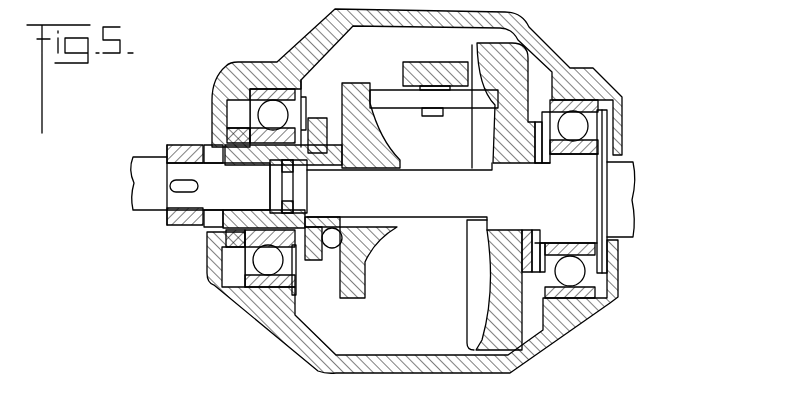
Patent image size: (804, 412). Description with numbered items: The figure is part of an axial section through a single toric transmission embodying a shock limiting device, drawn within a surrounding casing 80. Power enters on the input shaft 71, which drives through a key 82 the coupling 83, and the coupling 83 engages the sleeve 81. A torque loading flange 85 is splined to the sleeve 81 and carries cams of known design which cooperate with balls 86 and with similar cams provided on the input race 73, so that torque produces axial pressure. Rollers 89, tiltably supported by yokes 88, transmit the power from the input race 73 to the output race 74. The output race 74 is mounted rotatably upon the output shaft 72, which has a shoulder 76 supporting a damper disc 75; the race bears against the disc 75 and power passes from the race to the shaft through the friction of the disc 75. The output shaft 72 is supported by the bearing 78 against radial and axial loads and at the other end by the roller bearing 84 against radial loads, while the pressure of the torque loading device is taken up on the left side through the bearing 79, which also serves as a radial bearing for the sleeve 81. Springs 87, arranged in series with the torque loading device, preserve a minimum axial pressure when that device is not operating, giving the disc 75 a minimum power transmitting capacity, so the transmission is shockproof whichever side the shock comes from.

The input shaft 71 is at (143, 192).
The output shaft 72 is at (440, 207).
The input race 73 is at (347, 293).
The output race 74 is at (503, 287).
The damper disc 75 is at (536, 270).
The shoulder 76 is at (596, 296).
The bearing 78 is at (577, 268).
The bearing 79 is at (248, 317).
The housing 80 is at (318, 360).
The sleeve 81 is at (255, 262).
The key 82 is at (212, 224).
The coupling 83 is at (172, 224).
The roller bearing 84 is at (298, 205).
The torque loading flange 85 is at (317, 118).
The balls 86 is at (330, 249).
The springs 87 is at (295, 310).
The yokes 88 is at (407, 72).
The rollers 89 is at (401, 100).